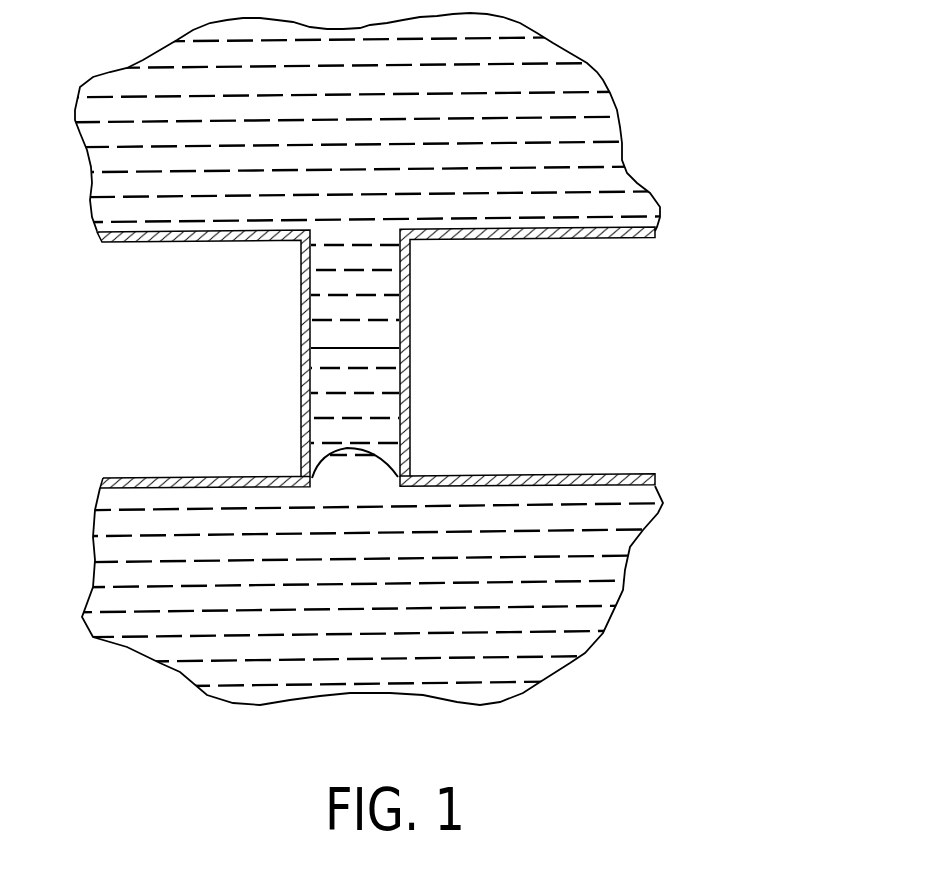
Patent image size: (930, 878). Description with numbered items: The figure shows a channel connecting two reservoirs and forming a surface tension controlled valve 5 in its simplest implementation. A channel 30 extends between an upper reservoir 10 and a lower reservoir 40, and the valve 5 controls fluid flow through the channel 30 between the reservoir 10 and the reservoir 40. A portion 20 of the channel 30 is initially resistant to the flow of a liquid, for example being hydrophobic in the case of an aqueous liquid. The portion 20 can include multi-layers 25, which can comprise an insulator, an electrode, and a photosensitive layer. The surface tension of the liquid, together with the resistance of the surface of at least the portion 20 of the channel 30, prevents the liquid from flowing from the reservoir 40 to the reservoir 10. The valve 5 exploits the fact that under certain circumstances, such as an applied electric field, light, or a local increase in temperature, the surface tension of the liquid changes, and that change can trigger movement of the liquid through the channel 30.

The surface tension controlled valve 5 is at (672, 345).
The reservoir 10 is at (618, 126).
The portion of the channel 20 is at (383, 382).
The multi-layers 25 is at (389, 431).
The channel 30 is at (278, 245).
The reservoir 40 is at (626, 592).